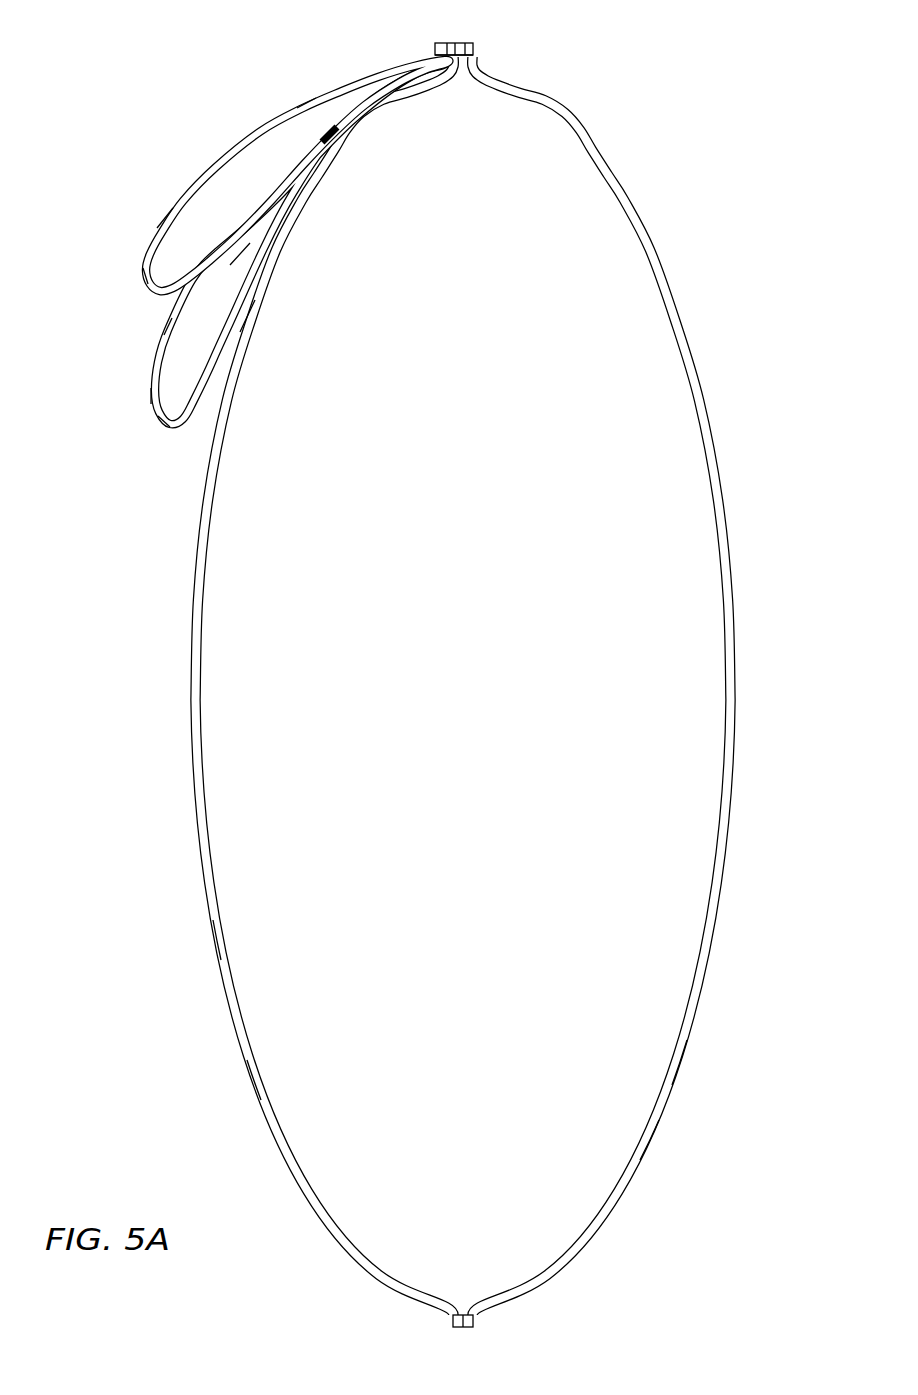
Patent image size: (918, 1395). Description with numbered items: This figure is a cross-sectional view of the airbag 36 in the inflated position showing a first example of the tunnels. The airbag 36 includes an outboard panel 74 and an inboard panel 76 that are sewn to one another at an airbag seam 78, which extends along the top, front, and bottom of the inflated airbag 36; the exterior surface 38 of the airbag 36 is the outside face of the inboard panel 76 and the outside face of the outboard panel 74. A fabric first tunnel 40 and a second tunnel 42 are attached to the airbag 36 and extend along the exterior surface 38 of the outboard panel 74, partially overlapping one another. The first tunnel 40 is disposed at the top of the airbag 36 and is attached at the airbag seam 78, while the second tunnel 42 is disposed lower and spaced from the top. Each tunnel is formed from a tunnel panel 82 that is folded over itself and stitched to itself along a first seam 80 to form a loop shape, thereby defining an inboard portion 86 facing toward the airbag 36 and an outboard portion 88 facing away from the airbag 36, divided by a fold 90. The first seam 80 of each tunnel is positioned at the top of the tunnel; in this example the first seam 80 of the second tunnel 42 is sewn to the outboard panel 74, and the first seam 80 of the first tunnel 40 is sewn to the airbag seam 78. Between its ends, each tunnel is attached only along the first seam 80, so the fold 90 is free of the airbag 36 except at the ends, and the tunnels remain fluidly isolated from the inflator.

The airbag 36 is at (352, 1262).
The exterior surface 38 is at (212, 940).
The first tunnel 40 is at (230, 163).
The second tunnel 42 is at (155, 367).
The outboard panel 74 is at (250, 1072).
The inboard panel 76 is at (688, 1042).
The airbag seam 78 is at (473, 50).
The first seam 80 is at (330, 140).
The tunnel panel 82 is at (167, 223).
The inboard portion 86 is at (243, 327).
The outboard portion 88 is at (307, 108).
The fold 90 is at (148, 288).